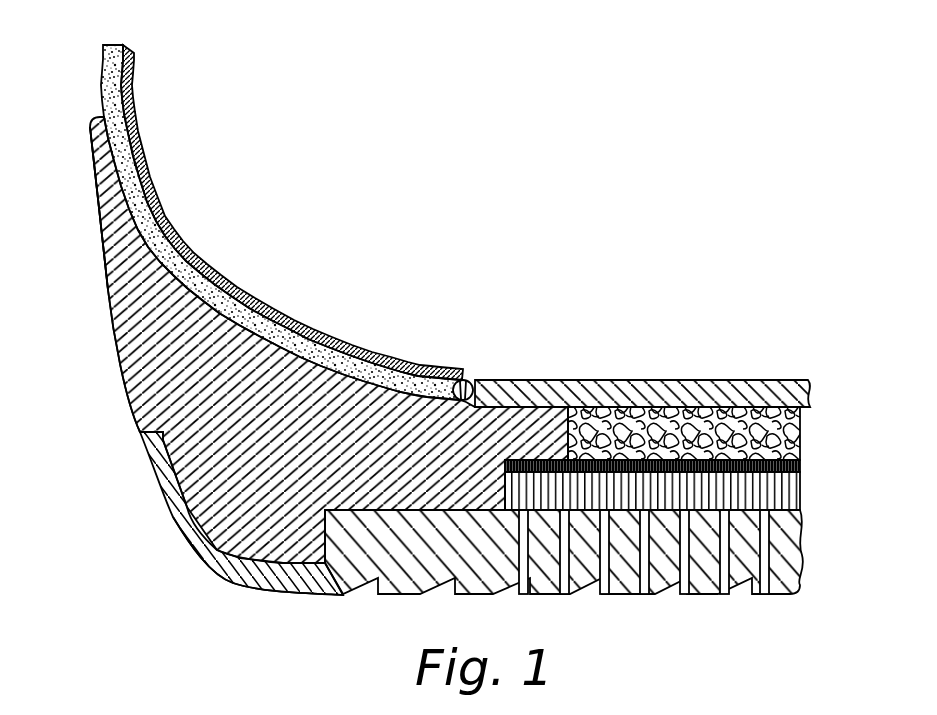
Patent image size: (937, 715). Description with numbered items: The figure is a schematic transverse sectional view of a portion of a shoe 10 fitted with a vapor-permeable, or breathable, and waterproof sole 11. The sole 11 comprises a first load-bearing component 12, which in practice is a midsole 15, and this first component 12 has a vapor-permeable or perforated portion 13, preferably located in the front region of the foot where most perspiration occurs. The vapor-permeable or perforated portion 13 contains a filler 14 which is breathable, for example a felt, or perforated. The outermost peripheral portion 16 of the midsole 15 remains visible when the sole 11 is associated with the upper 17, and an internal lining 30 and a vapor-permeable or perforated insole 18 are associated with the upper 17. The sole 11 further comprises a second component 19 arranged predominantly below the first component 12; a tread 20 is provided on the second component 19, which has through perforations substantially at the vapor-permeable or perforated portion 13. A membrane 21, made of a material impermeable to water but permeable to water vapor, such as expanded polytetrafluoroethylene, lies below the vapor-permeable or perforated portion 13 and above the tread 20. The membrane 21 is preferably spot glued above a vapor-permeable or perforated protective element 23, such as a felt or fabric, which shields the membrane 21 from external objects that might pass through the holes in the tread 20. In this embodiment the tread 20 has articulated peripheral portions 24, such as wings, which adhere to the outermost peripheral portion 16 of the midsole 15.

The shoe 10 is at (456, 347).
The sole 11 is at (158, 533).
The first load-bearing component 12 is at (293, 340).
The vapor-permeable or perforated portion 13 is at (684, 429).
The filler 14 is at (800, 428).
The midsole 15 is at (132, 337).
The outermost peripheral portion 16 is at (100, 238).
The upper 17 is at (116, 50).
The insole 18 is at (500, 379).
The second component 19 is at (808, 561).
The tread 20 is at (604, 592).
The membrane 21 is at (800, 467).
The protective element 23 is at (795, 496).
The articulated peripheral portions 24 is at (160, 470).
The internal lining 30 is at (158, 199).